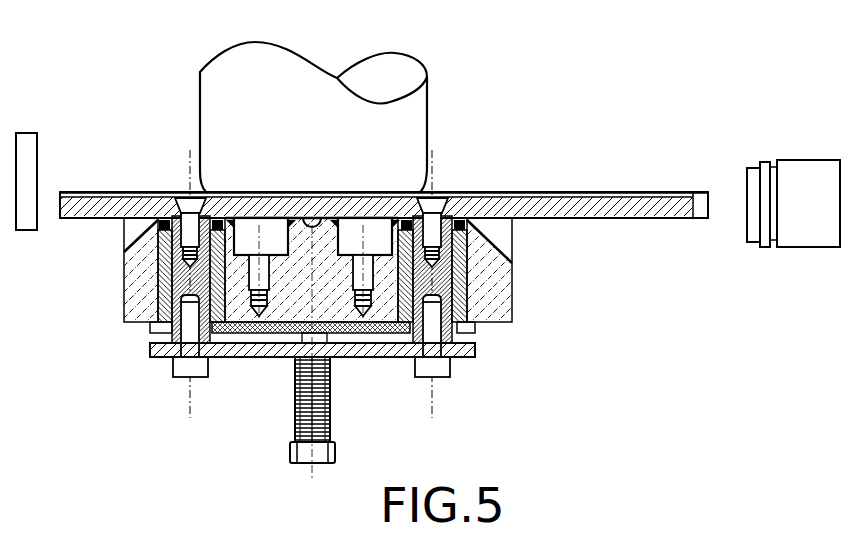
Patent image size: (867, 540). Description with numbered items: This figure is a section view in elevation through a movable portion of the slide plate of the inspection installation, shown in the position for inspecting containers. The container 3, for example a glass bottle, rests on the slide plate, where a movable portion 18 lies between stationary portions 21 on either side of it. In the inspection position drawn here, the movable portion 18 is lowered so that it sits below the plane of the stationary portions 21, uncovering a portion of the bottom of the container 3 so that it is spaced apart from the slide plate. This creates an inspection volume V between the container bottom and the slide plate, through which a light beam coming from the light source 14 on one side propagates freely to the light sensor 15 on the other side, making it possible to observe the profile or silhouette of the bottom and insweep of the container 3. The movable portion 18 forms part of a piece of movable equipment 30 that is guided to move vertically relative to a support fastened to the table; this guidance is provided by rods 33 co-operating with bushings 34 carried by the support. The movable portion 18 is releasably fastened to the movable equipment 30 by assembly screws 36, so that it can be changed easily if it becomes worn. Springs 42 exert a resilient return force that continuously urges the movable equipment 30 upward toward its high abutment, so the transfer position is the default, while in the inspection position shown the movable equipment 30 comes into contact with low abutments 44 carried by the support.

The container 3 is at (293, 67).
The light source 14 is at (26, 136).
The light sensor 15 is at (800, 167).
The movable portion 18 is at (573, 192).
The stationary portion 21 is at (642, 192).
The movable equipment 30 is at (245, 357).
The rod 33 is at (182, 268).
The bushing 34 is at (160, 296).
The assembly screw 36 is at (163, 190).
The spring 42 is at (331, 402).
The low abutment 44 is at (353, 223).
The inspection volume V is at (507, 192).